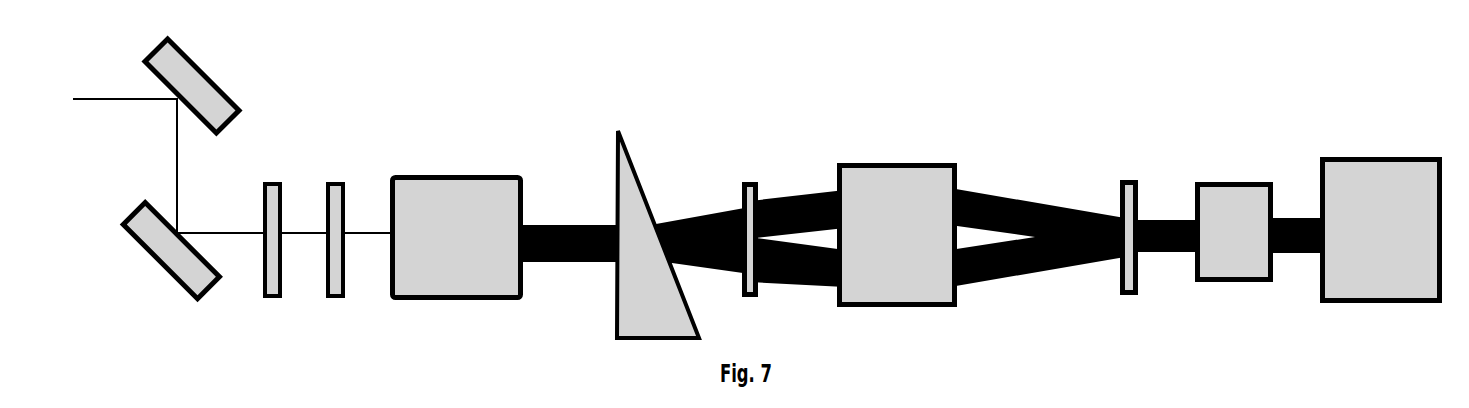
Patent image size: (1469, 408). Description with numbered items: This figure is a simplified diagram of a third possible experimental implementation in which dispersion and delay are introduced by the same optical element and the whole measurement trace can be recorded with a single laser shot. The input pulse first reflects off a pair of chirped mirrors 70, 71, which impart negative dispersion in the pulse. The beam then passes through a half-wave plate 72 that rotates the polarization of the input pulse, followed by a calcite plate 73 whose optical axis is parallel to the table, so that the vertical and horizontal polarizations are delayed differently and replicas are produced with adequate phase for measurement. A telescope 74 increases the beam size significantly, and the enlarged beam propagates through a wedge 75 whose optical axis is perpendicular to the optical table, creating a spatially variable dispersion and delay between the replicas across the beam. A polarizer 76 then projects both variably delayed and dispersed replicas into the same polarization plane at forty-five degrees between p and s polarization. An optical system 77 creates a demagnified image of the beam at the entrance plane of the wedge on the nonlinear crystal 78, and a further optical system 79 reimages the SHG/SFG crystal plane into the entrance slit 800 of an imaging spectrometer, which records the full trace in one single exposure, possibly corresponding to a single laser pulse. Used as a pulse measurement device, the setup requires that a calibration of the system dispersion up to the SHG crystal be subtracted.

The chirped mirror 70 is at (192, 85).
The chirped mirror 71 is at (171, 251).
The half-wave plate 72 is at (273, 253).
The calcite plate 73 is at (336, 253).
The telescope 74 is at (457, 250).
The wedge 75 is at (658, 228).
The polarizer 76 is at (751, 255).
The optical system 77 is at (899, 250).
The nonlinear crystal 78 is at (1129, 251).
The optical system 79 is at (1236, 245).
The entrance slit 800 is at (1385, 247).